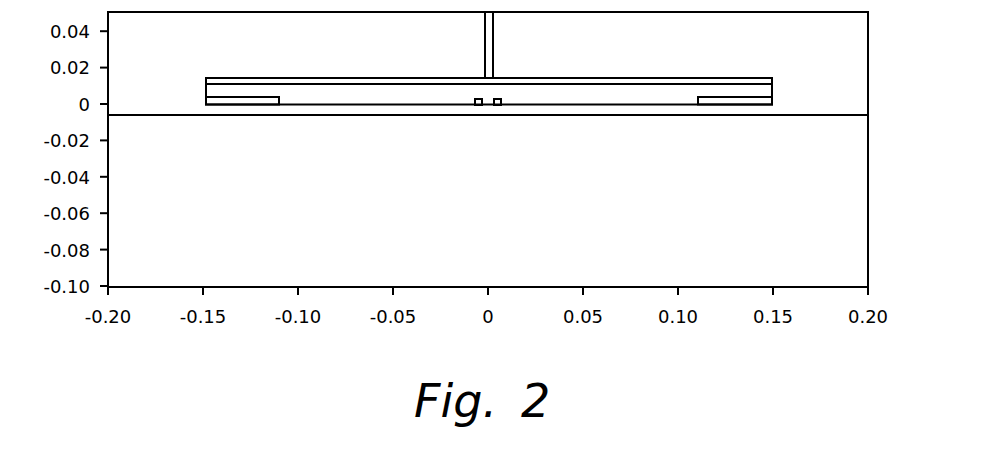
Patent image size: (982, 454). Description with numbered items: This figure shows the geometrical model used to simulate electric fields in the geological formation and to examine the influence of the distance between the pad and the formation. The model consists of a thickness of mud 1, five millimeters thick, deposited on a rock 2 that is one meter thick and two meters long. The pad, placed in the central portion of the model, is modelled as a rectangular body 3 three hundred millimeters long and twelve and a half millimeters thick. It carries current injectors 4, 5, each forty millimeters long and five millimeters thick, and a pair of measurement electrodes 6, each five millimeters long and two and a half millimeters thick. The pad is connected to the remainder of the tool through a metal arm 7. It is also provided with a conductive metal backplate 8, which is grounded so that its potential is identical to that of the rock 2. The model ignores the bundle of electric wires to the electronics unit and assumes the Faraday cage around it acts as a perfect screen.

The mud 1 is at (410, 56).
The rock 2 is at (411, 212).
The rectangular body 3 is at (355, 90).
The current injector 4 is at (240, 99).
The current injector 5 is at (738, 99).
The measurement electrodes 6 is at (479, 107).
The metal arm 7 is at (496, 41).
The conductive metal backplate 8 is at (592, 78).